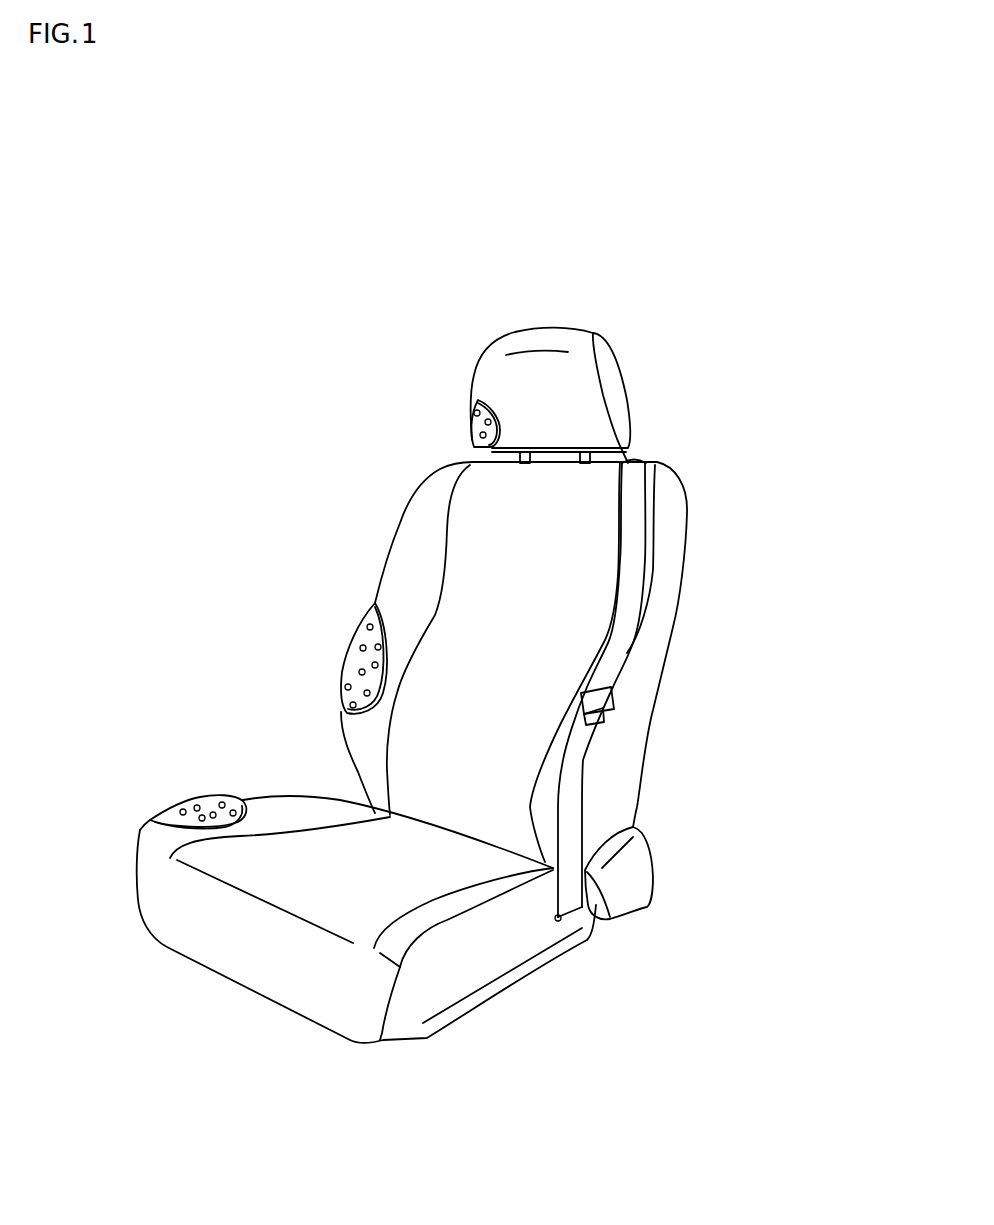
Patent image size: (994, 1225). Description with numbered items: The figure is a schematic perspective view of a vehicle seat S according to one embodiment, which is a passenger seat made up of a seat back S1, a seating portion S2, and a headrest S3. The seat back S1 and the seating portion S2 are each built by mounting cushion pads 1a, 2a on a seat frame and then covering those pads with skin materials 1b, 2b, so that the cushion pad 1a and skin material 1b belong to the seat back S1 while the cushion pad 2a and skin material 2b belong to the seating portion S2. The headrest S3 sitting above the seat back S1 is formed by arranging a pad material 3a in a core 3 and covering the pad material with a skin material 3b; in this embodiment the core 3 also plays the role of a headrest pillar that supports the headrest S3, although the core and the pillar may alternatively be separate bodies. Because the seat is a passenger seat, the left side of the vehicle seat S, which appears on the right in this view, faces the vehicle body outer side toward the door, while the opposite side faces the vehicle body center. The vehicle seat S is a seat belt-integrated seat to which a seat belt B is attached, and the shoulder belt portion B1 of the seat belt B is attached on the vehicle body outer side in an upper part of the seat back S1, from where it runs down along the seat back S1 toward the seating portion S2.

The vehicle seat S is at (187, 277).
The seat back S1 is at (378, 547).
The seating portion S2 is at (273, 785).
The headrest S3 is at (465, 345).
The cushion pad 1a is at (360, 660).
The skin material 1b is at (377, 602).
The cushion pad 2a is at (175, 800).
The skin material 2b is at (235, 798).
The pad material 3a is at (467, 422).
The skin material 3b is at (470, 402).
The core 3 is at (592, 457).
The shoulder belt portion B1 is at (628, 588).
The seat belt B is at (600, 691).